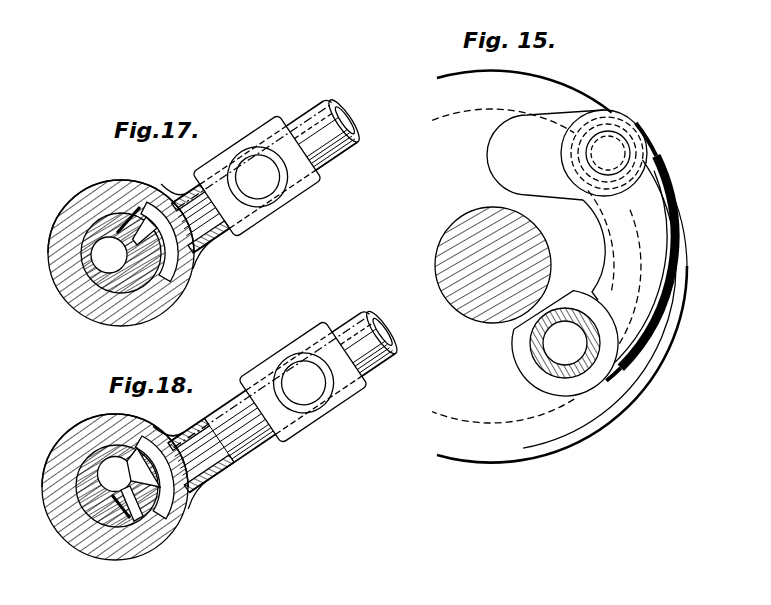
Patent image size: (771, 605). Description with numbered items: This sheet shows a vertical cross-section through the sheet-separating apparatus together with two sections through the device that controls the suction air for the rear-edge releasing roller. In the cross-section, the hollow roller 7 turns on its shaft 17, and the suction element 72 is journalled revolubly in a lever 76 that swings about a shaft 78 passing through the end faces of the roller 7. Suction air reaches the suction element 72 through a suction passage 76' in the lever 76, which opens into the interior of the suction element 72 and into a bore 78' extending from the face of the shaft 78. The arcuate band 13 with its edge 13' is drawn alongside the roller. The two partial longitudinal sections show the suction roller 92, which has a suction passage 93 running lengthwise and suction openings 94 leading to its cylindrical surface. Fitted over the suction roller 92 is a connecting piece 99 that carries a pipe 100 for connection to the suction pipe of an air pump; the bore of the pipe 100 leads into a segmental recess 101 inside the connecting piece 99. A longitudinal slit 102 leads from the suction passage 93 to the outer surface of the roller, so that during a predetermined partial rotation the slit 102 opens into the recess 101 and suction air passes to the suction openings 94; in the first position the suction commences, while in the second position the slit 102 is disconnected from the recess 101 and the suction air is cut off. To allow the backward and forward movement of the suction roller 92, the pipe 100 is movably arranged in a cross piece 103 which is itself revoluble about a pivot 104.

In FIG. 15, the hollow roller 7 is at (590, 437).
In FIG. 15, the cam band 13 is at (654, 252).
In FIG. 15, the cam band edge 13' is at (665, 262).
In FIG. 15, the shaft 17 is at (450, 258).
In FIG. 15, the suction element 72 is at (624, 140).
In FIG. 15, the lever 76 is at (662, 270).
In FIG. 15, the suction passage 76' is at (655, 267).
In FIG. 15, the shaft 78 is at (540, 343).
In FIG. 15, the bore 78' is at (550, 343).
In FIG. 17, the suction roller 92 is at (90, 277).
In FIG. 18, the suction roller 92 is at (75, 510).
In FIG. 17, the suction passage 93 is at (98, 262).
In FIG. 18, the suction passage 93 is at (110, 470).
In FIG. 17, the suction openings 94 is at (70, 212).
In FIG. 18, the suction openings 94 is at (188, 493).
In FIG. 17, the connecting piece 99 is at (88, 190).
In FIG. 18, the connecting piece 99 is at (72, 438).
In FIG. 17, the pipe 100 is at (340, 166).
In FIG. 18, the pipe 100 is at (378, 376).
In FIG. 17, the segmental recess 101 is at (187, 270).
In FIG. 18, the segmental recess 101 is at (187, 515).
In FIG. 17, the longitudinal slit 102 is at (130, 217).
In FIG. 18, the longitudinal slit 102 is at (120, 523).
In FIG. 17, the cross piece 103 is at (278, 217).
In FIG. 18, the cross piece 103 is at (312, 432).
In FIG. 17, the pivot 104 is at (300, 207).
In FIG. 18, the pivot 104 is at (337, 420).